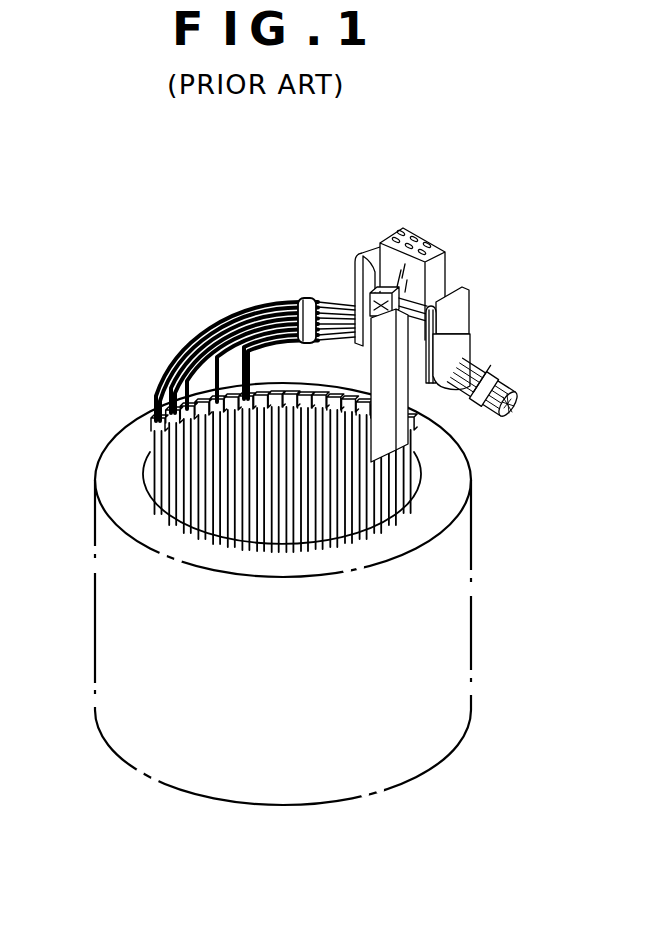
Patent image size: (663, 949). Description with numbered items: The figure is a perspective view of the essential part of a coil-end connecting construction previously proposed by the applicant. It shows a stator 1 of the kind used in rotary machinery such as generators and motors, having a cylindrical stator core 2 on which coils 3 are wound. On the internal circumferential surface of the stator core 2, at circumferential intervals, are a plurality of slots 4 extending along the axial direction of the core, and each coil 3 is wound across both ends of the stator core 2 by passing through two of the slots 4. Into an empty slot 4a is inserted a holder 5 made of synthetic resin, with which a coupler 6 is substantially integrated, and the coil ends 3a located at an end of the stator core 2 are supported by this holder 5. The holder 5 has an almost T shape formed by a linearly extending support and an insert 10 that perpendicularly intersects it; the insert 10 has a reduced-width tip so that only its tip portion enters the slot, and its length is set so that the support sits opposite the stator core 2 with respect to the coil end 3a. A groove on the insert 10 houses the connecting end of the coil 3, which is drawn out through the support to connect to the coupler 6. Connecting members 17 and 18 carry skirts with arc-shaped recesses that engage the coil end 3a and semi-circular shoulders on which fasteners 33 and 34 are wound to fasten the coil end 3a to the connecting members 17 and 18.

The stator 1 is at (291, 575).
The stator core 2 is at (110, 462).
The coil 3 is at (163, 378).
The coil end 3a is at (487, 377).
The slot 4 is at (183, 496).
The empty slot 4a is at (392, 508).
The holder 5 is at (419, 396).
The coupler 6 is at (440, 274).
The insert 10 is at (380, 369).
The connecting member 17 is at (462, 307).
The connecting member 18 is at (362, 254).
The fastener 33 is at (440, 334).
The fastener 34 is at (372, 300).